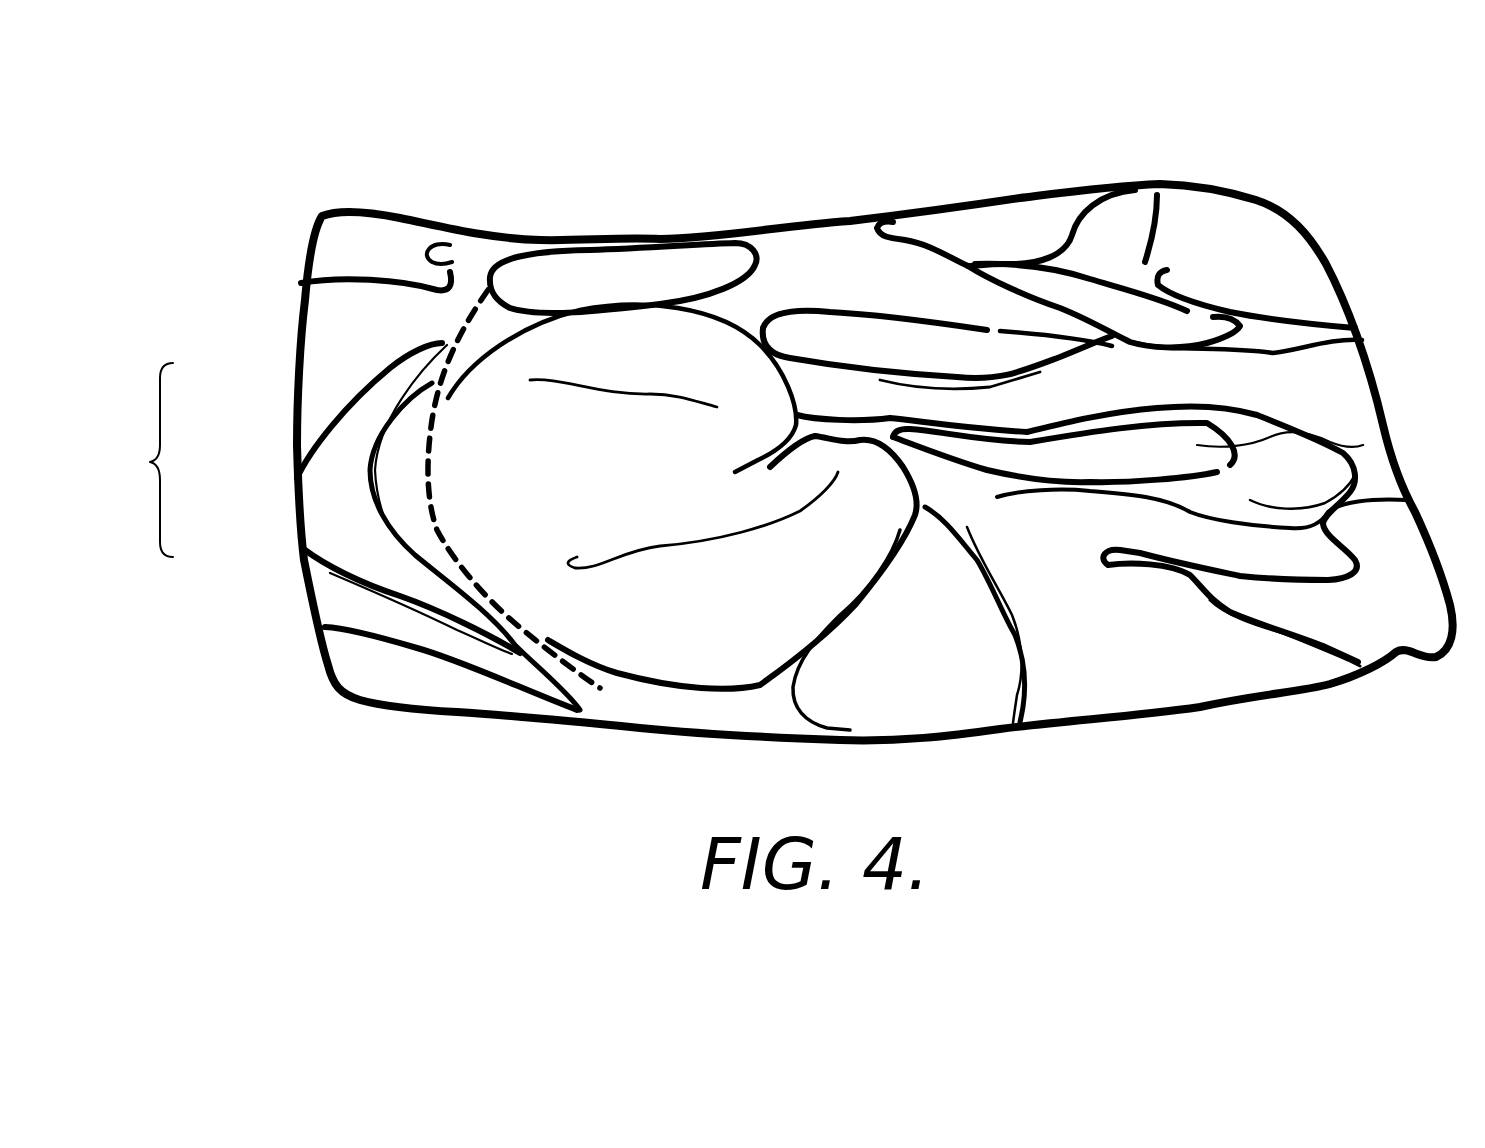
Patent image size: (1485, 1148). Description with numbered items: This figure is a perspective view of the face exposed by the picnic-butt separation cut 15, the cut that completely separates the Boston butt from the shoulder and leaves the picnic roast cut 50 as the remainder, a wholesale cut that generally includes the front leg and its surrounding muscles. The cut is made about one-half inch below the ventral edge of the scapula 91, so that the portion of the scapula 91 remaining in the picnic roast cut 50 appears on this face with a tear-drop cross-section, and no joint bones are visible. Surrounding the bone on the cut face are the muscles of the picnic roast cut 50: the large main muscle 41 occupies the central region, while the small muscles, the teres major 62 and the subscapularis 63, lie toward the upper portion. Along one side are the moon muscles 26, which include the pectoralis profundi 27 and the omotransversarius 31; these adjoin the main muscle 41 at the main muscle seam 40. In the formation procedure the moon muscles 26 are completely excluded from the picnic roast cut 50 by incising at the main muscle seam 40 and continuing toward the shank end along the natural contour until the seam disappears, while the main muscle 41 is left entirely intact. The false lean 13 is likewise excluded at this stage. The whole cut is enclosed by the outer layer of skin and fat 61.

The picnic-butt separation cut 15 is at (1350, 190).
The picnic roast cut 50 is at (457, 165).
The main muscle 41 is at (630, 344).
The subscapularis 63 is at (893, 340).
The teres major 62 is at (1123, 370).
The scapula 91 is at (1305, 430).
The moon muscles 26 is at (343, 526).
The main muscle seam 40 is at (427, 423).
The omotransversarius 31 is at (400, 490).
The pectoralis profundi 27 is at (328, 537).
The false lean 13 is at (357, 612).
The layer of skin and fat 61 is at (613, 718).